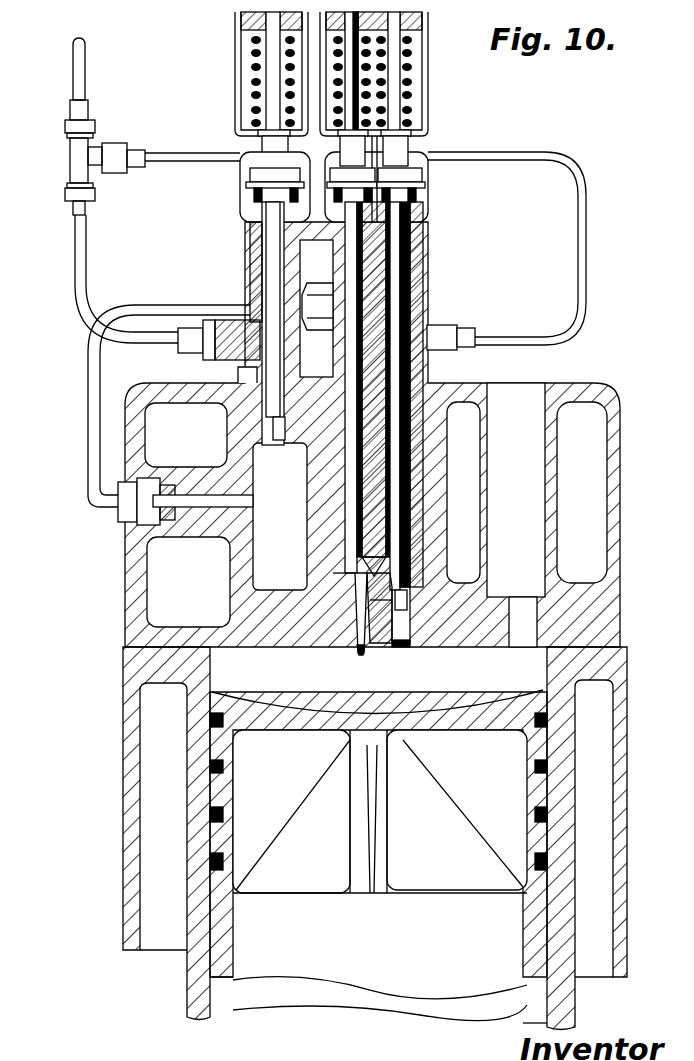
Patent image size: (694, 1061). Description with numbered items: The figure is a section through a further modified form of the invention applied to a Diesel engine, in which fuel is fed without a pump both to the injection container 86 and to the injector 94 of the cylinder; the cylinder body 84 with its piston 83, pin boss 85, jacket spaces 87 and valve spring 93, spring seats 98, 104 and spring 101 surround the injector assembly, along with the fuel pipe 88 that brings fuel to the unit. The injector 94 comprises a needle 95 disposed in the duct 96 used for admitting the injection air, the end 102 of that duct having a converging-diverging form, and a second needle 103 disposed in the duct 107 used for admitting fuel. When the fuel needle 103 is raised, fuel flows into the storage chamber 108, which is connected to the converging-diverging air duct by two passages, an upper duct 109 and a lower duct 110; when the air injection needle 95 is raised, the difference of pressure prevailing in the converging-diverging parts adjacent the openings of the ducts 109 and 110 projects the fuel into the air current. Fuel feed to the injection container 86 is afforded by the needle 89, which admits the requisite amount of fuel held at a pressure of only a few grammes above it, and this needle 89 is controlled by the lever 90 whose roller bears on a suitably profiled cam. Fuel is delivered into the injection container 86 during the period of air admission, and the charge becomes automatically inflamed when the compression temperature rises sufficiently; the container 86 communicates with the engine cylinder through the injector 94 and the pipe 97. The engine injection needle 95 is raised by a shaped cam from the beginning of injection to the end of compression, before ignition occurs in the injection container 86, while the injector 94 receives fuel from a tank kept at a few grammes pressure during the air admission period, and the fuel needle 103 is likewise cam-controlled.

The piston 83 is at (305, 670).
The cylinder 84 is at (124, 757).
The piston pin boss 85 is at (468, 713).
The injection container 86 is at (273, 608).
The water jacket 87 is at (273, 520).
The fuel pipe 88 is at (80, 70).
The needle 89 is at (278, 250).
The lever 90 is at (254, 197).
The valve spring 93 is at (258, 75).
The injector 94 is at (384, 513).
The needle 95 is at (365, 50).
The duct 96 is at (360, 457).
The pipe 97 is at (318, 300).
The spring seat 98 is at (350, 192).
The spring 101 is at (360, 105).
The end 102 is at (362, 627).
The needle 103 is at (423, 270).
The spring seat 104 is at (410, 195).
The duct 107 is at (420, 572).
The storage chamber 108 is at (372, 622).
The upper duct 109 is at (420, 600).
The lower duct 110 is at (402, 620).